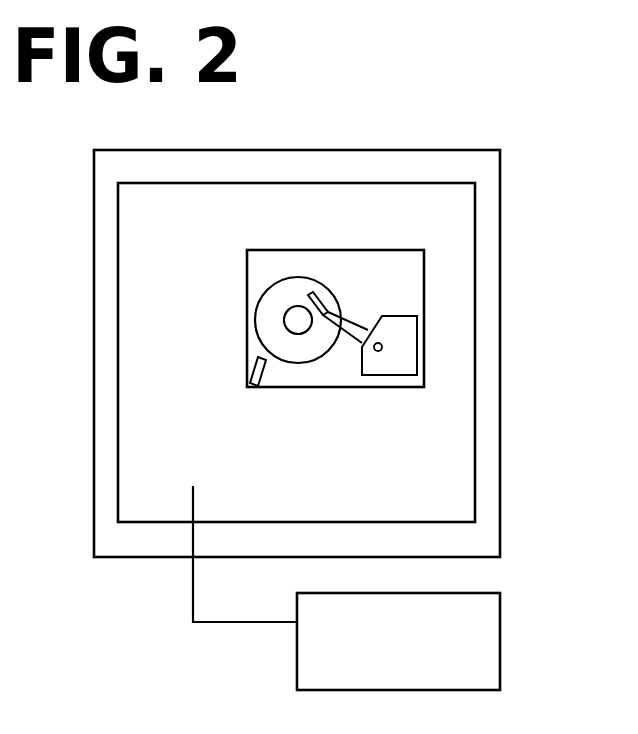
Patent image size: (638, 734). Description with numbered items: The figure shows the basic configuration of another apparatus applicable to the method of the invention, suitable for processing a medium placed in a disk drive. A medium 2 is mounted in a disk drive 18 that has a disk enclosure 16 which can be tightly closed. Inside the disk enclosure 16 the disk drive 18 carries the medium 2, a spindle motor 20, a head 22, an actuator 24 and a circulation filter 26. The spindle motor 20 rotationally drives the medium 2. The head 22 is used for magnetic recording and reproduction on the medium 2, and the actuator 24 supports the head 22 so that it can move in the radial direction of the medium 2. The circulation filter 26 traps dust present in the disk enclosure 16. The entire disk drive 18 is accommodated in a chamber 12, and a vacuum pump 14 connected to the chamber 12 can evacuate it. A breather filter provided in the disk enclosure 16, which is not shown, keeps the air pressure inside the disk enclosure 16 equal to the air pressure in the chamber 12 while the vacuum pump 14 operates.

The chamber 12 is at (500, 388).
The vacuum pump 14 is at (500, 637).
The disk enclosure 16 is at (401, 250).
The disk drive 18 is at (297, 270).
The medium 2 is at (263, 305).
The spindle motor 20 is at (293, 323).
The head 22 is at (309, 292).
The actuator 24 is at (353, 342).
The circulation filter 26 is at (250, 368).